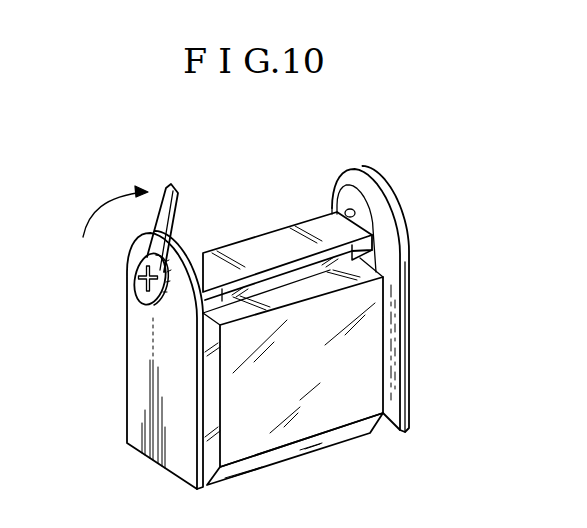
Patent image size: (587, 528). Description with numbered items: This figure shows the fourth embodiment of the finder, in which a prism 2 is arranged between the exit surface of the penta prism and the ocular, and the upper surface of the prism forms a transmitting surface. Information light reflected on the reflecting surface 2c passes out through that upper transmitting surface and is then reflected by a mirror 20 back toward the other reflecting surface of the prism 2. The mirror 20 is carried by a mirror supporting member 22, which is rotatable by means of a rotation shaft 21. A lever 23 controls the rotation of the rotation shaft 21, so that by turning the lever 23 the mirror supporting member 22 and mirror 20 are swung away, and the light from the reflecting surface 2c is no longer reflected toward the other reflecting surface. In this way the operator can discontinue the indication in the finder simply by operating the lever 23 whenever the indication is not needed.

The prism 2 is at (370, 347).
The reflecting surface 2c is at (322, 443).
The mirror 20 is at (352, 252).
The rotation shaft 21 is at (356, 211).
The mirror supporting member 22 is at (262, 247).
The lever 23 is at (163, 199).